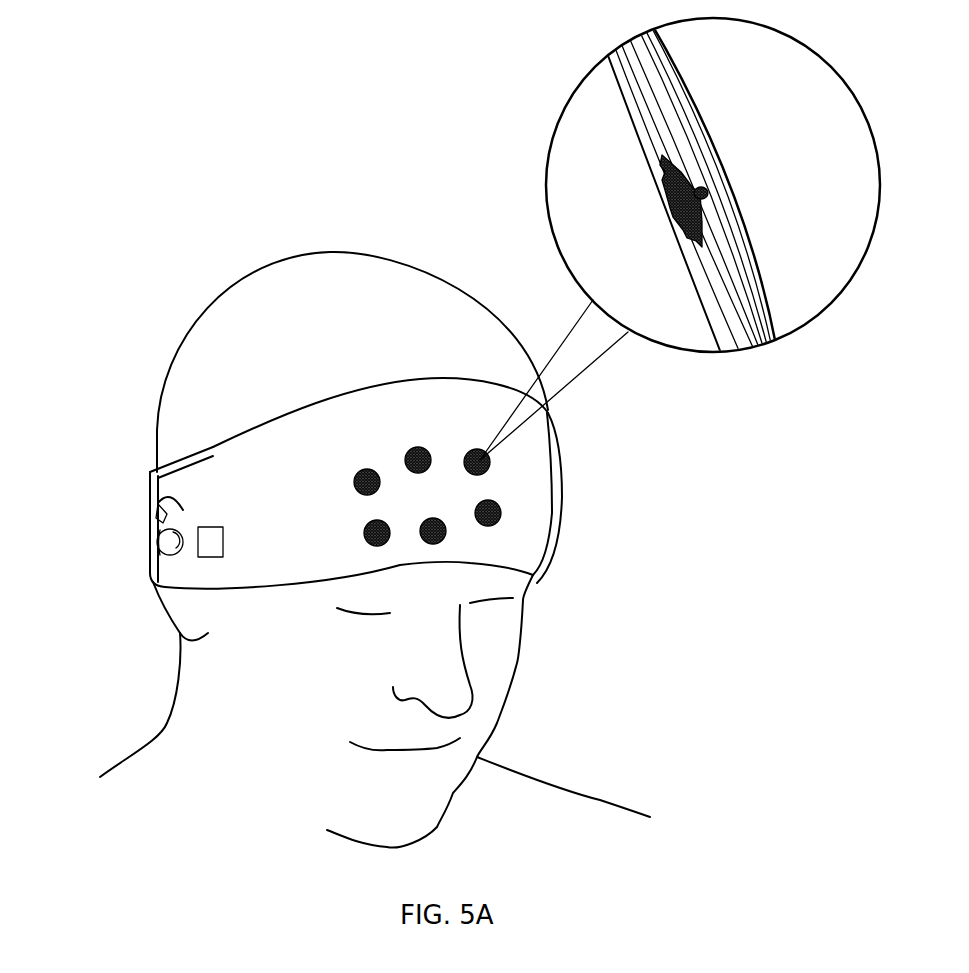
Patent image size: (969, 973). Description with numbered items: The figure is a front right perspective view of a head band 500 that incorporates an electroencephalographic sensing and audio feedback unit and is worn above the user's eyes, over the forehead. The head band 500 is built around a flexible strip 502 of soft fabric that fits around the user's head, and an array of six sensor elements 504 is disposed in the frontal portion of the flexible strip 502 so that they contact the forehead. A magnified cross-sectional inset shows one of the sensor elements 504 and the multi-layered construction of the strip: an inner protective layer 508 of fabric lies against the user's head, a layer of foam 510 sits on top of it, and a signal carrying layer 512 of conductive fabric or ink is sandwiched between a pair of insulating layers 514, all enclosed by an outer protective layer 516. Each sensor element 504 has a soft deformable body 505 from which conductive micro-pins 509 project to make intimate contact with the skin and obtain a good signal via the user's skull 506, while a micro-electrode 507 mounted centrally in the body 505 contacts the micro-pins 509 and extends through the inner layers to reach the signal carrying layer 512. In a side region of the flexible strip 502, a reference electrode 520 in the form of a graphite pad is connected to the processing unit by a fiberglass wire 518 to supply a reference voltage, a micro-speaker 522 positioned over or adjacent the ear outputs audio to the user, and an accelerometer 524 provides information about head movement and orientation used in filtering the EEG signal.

The head band 500 is at (634, 610).
The flexible strip 502 is at (557, 517).
The sensor elements 504 is at (413, 447).
The soft deformable body 505 is at (697, 240).
The user's skull 506 is at (641, 257).
The micro-electrode 507 is at (708, 195).
The inner protective layer 508 is at (613, 75).
The conductive micro-pins 509 is at (673, 213).
The layer of foam 510 is at (657, 110).
The signal carrying layer 512 is at (695, 150).
The insulating layers 514 is at (742, 247).
The outer protective layer 516 is at (757, 277).
The fiberglass wire 518 is at (150, 505).
The reference electrode 520 is at (152, 520).
The micro-speaker 522 is at (152, 555).
The accelerometer 524 is at (210, 558).